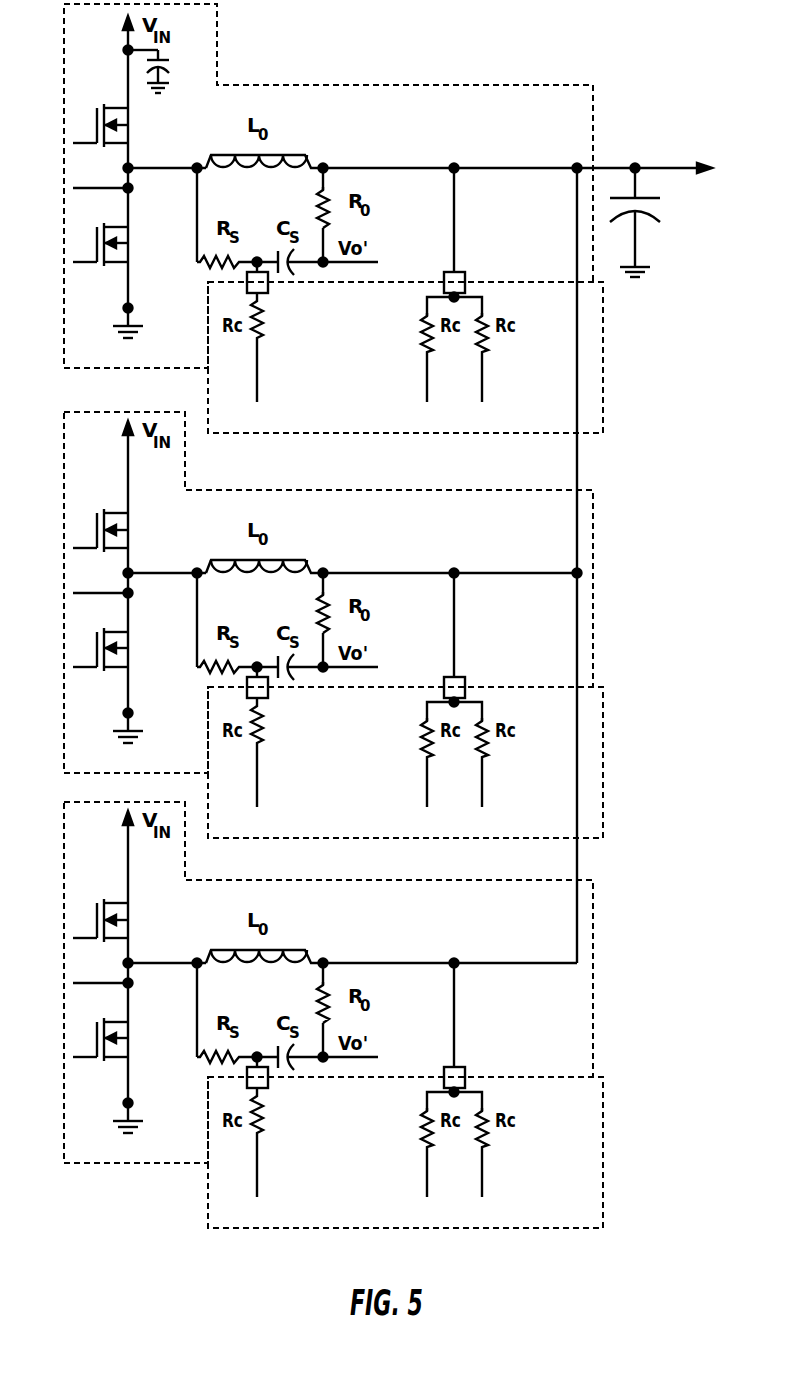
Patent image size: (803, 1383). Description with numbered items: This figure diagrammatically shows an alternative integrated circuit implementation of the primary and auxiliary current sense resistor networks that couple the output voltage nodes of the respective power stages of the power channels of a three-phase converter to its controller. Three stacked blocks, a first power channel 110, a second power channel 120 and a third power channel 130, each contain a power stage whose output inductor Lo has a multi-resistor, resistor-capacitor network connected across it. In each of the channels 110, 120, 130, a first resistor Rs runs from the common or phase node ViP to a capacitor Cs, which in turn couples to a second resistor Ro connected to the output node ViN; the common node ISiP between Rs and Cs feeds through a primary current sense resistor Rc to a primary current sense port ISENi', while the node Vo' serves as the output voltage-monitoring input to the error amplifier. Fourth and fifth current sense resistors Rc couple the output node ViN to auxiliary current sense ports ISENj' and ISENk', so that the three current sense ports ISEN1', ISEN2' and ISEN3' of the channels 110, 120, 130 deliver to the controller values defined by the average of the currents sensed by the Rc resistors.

The first phase (channel 1) power stage with current sensing network 110 is at (593, 98).
The second phase (channel 2) power stage with current sensing network 120 is at (593, 503).
The third phase (channel 3) power stage with current sensing network 130 is at (593, 893).